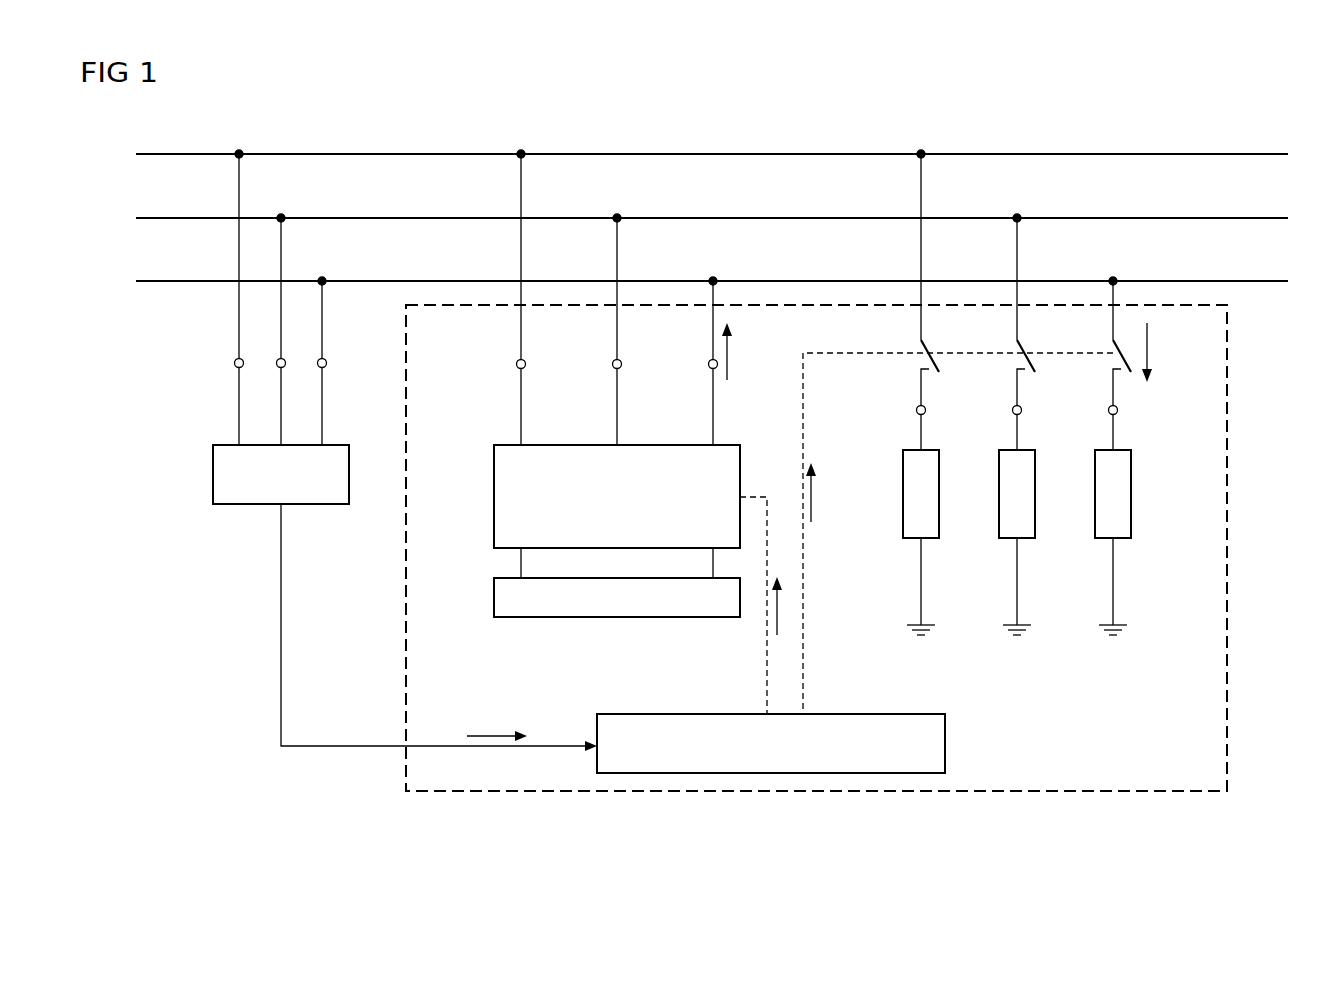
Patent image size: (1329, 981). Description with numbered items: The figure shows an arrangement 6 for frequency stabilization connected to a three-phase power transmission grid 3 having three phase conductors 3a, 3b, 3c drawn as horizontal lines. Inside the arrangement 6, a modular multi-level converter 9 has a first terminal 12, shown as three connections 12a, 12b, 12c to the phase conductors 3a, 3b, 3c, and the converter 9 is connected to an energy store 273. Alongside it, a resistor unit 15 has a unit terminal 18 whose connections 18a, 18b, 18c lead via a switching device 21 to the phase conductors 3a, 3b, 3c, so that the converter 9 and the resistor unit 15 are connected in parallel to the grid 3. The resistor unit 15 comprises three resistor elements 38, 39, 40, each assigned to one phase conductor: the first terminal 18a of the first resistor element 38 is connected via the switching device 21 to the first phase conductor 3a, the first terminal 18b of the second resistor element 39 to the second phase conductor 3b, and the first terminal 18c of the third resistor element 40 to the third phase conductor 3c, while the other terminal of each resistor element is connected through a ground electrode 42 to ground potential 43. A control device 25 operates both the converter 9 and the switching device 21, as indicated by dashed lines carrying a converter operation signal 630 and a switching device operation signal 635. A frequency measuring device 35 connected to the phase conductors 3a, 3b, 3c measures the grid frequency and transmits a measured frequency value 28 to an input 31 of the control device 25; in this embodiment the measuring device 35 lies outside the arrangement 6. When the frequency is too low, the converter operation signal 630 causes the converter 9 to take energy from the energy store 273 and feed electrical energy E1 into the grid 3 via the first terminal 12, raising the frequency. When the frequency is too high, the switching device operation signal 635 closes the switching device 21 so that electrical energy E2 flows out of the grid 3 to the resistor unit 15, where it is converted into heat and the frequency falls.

The three-phase power transmission grid 3 is at (712, 174).
The first phase conductor 3a is at (1253, 154).
The second phase conductor 3b is at (1220, 218).
The third phase conductor 3c is at (1247, 281).
The arrangement for frequency stabilization 6 is at (1228, 616).
The modular multi-level converter 9 is at (494, 496).
The first terminal (converter terminal) 12 is at (569, 297).
The converter terminal connection to first phase conductor 12a is at (516, 364).
The converter terminal connection to second phase conductor 12b is at (612, 364).
The converter terminal connection to third phase conductor 12c is at (708, 364).
The resistor unit 15 is at (1050, 575).
The unit terminal (second terminal) 18 is at (974, 405).
The first terminal of the first resistor element 18a is at (916, 410).
The first terminal of the second resistor element 18b is at (1012, 410).
The first terminal of the third resistor element 18c is at (1108, 410).
The switching device 21 is at (894, 346).
The control device 25 is at (946, 745).
The measured frequency value 28 is at (486, 735).
The input of the control device 31 is at (594, 742).
The frequency measuring device 35 is at (212, 470).
The first resistor element 38 is at (913, 540).
The second resistor element 39 is at (1009, 540).
The third resistor element 40 is at (1123, 575).
The ground electrode 42 is at (1114, 603).
The ground potential 43 is at (1113, 638).
The energy store 273 is at (494, 594).
The converter operation signal 630 is at (778, 614).
The switching device operation signal 635 is at (812, 494).
The electrical energy fed into the grid E1 is at (728, 346).
The electrical energy withdrawn from the grid E2 is at (1148, 348).